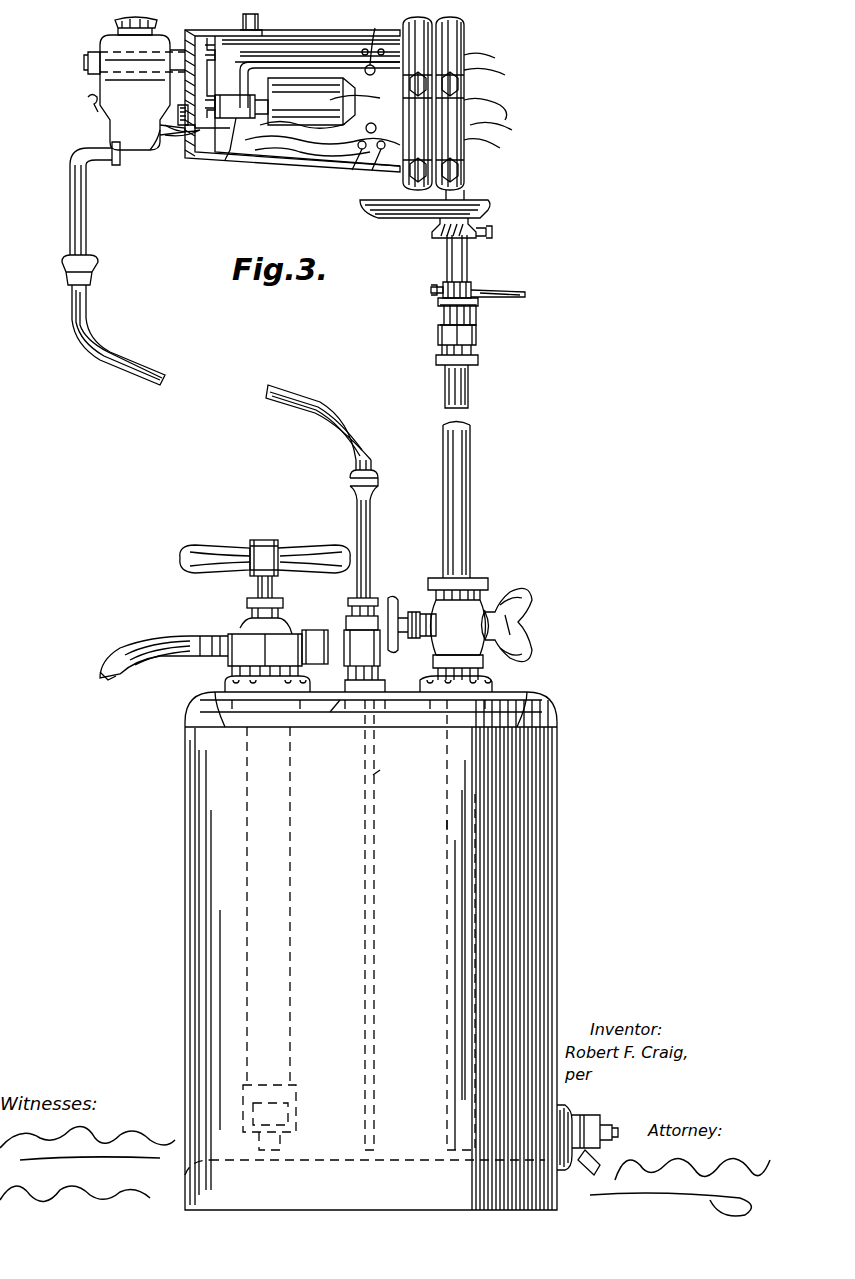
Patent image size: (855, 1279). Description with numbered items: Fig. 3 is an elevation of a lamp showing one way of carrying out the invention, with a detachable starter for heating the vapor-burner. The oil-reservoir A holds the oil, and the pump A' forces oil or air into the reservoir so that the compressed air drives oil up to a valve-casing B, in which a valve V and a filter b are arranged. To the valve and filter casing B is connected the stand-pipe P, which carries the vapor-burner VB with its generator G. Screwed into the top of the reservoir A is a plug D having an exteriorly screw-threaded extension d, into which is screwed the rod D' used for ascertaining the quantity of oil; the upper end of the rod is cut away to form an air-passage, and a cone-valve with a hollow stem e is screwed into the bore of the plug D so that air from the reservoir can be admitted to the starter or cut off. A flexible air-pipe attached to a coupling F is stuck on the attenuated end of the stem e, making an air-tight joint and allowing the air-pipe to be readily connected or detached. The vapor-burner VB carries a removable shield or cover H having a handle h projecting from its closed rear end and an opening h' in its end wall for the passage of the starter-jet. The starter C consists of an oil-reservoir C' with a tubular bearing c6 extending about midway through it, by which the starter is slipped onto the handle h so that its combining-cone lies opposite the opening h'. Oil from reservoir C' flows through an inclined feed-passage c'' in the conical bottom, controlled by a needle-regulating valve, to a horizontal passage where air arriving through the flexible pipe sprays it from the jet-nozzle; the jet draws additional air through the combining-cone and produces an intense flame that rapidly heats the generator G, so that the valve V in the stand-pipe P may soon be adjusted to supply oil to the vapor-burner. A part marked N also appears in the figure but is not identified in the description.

The oil-reservoir A is at (401, 943).
The pump A' is at (265, 608).
The valve-casing B is at (458, 629).
The filter b is at (522, 628).
The starter C is at (142, 92).
The oil-reservoir of the starter C' is at (135, 80).
The inclined feed-passage c'' is at (81, 54).
The tubular bearing c6 is at (432, 826).
The plug D is at (362, 648).
The rod D' is at (387, 771).
The screw-threaded extension d is at (352, 700).
The valve-stem e is at (350, 606).
The coupling F is at (357, 508).
The generator G is at (464, 40).
The vapor-burner VB is at (474, 103).
The shield H is at (292, 89).
The handle h is at (123, 65).
The opening h' is at (292, 124).
The nozzle tube N is at (236, 118).
The stand-pipe P is at (445, 386).
The valve V is at (392, 605).